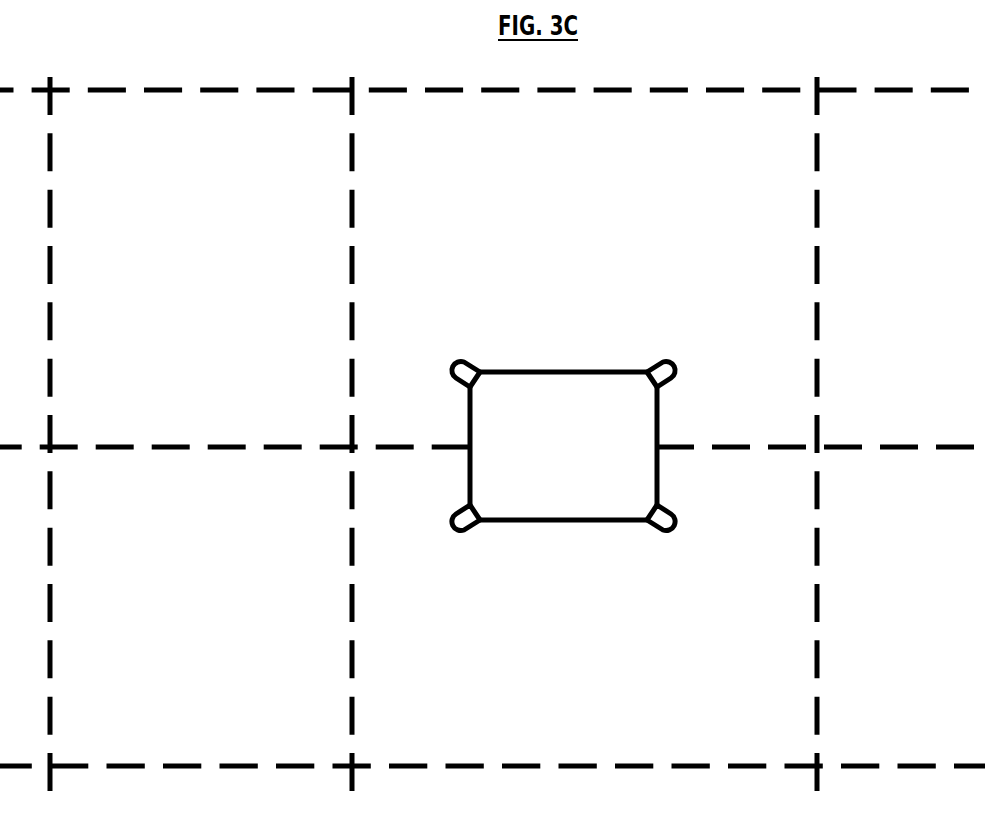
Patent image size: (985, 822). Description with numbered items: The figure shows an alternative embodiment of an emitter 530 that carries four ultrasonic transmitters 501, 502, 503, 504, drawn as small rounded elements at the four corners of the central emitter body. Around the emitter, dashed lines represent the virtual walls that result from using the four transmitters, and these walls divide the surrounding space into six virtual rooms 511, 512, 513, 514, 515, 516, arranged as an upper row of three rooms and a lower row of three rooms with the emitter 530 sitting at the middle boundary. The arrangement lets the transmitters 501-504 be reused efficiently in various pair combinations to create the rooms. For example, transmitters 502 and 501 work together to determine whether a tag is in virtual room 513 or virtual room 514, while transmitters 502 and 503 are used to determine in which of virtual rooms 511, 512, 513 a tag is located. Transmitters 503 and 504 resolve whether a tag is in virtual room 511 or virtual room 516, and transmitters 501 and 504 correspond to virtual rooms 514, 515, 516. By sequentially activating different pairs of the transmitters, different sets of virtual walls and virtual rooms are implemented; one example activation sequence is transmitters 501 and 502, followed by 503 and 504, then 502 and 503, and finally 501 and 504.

The US transmitter 501 is at (668, 531).
The US transmitter 502 is at (668, 363).
The US transmitter 503 is at (455, 363).
The US transmitter 504 is at (456, 531).
The virtual room 511 is at (193, 243).
The virtual room 512 is at (560, 243).
The virtual room 513 is at (898, 243).
The virtual room 514 is at (898, 619).
The virtual room 515 is at (561, 619).
The virtual room 516 is at (193, 619).
The emitter 530 is at (557, 453).